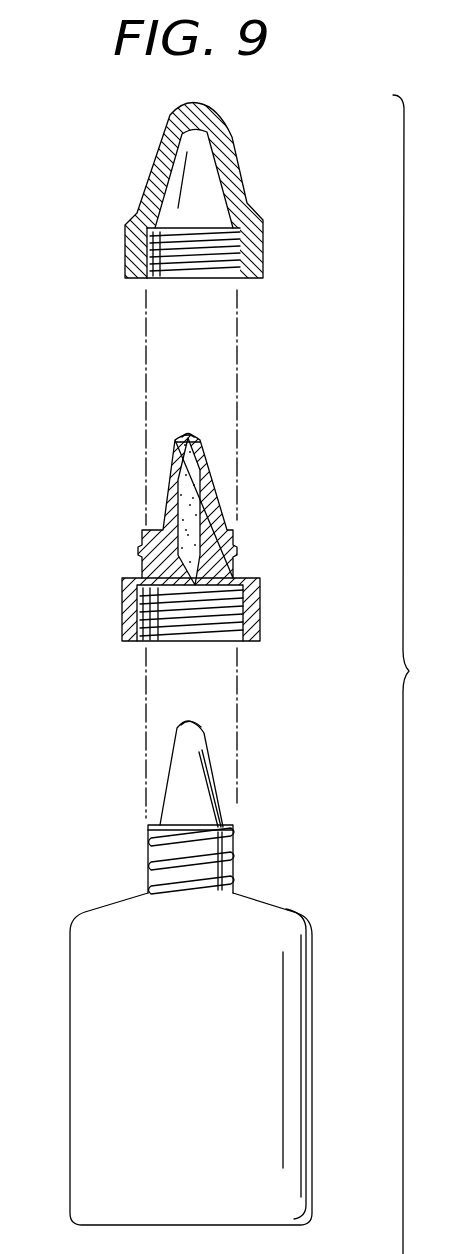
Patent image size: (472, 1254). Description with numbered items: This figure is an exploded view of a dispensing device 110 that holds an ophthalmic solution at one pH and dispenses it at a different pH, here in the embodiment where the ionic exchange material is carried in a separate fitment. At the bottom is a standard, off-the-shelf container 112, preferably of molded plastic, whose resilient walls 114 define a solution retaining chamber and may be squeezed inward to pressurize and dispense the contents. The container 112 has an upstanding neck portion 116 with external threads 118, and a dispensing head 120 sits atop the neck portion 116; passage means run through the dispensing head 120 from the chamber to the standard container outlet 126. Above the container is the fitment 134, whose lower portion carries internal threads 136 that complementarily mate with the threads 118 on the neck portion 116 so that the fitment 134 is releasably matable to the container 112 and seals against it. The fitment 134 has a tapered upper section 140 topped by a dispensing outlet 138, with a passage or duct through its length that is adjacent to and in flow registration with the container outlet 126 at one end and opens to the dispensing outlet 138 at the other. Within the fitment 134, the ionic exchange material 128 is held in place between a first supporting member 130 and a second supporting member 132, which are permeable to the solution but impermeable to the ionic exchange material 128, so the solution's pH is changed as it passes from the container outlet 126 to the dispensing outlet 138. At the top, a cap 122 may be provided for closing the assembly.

The dispensing device 110 is at (416, 674).
The container 112 is at (192, 947).
The resilient walls 114 is at (70, 1053).
The neck portion 116 is at (197, 834).
The external threads 118 is at (233, 850).
The dispensing head 120 is at (221, 748).
The cap 122 is at (123, 162).
The dispensing outlet 126 is at (188, 722).
The ionic exchange material 128 is at (173, 482).
The first supporting member 130 is at (240, 578).
The second supporting member 132 is at (203, 443).
The fitment 134 is at (235, 521).
The internal threads 136 is at (167, 630).
The dispensing outlet 138 is at (188, 437).
The tapered upper section 140 is at (210, 500).